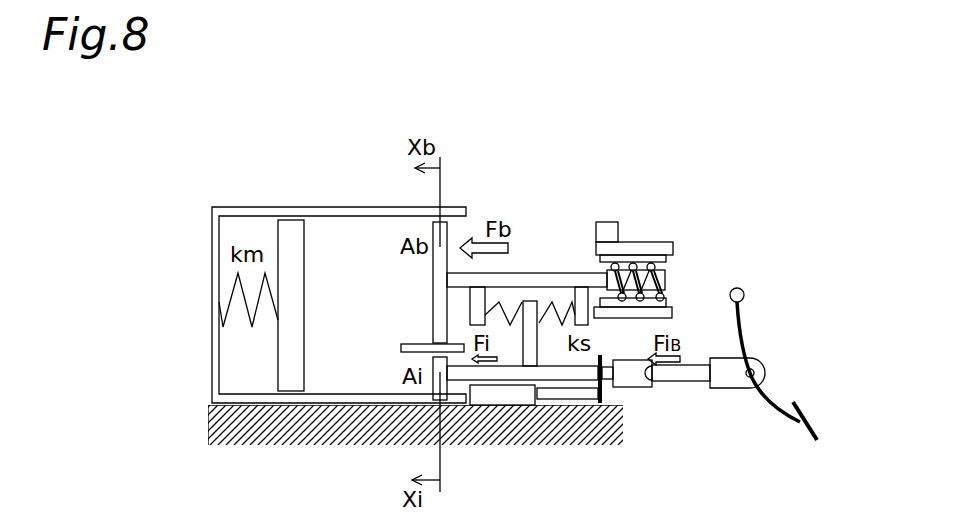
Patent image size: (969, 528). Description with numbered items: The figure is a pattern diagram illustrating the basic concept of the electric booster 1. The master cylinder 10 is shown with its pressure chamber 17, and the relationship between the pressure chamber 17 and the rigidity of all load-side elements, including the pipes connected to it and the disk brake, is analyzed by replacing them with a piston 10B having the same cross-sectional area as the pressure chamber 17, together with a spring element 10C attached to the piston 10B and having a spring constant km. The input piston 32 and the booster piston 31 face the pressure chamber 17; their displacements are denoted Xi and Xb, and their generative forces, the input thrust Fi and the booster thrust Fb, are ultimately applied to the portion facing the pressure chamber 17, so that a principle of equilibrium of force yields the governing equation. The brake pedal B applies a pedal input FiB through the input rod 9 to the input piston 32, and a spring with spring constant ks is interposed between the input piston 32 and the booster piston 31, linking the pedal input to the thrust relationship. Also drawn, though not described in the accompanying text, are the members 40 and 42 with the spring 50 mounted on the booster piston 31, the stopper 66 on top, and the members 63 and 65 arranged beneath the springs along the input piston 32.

The electric booster 1 is at (572, 172).
The input rod 9 is at (695, 382).
The master cylinder 10 is at (238, 205).
The piston 10B is at (290, 218).
The spring element 10C is at (248, 328).
The pressure chamber 17 is at (370, 314).
The booster piston 31 is at (548, 278).
The input piston 32 is at (603, 398).
The stroke simulator 40 is at (662, 251).
The simulator housing 42 is at (652, 247).
The simulator spring 50 is at (662, 280).
The movable member 63 is at (507, 312).
The guide block 65 is at (498, 390).
The stopper 66 is at (618, 227).
The brake pedal B is at (810, 438).